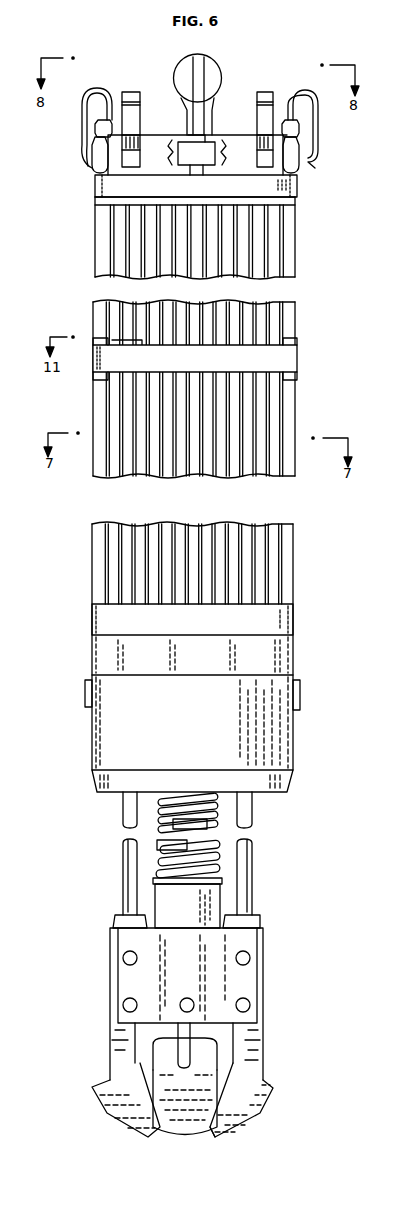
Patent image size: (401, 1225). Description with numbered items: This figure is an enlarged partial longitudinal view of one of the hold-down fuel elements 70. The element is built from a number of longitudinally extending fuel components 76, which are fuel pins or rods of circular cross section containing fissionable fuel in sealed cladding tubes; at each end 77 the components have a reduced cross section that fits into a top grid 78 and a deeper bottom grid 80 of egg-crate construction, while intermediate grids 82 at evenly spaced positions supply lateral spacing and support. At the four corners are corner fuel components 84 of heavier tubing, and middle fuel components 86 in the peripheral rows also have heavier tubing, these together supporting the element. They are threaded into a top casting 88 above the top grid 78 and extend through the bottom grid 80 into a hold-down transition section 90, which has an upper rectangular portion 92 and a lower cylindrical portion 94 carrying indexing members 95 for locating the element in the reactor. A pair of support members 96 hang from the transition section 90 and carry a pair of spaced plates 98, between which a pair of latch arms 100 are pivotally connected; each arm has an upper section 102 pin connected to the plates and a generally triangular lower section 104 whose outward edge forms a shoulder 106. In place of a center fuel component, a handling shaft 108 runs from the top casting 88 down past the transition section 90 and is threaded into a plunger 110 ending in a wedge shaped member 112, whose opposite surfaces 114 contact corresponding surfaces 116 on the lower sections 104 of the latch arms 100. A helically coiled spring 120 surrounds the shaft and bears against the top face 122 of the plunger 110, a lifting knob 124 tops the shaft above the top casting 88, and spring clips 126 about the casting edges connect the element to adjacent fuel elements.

The hold-down fuel element 70 is at (340, 550).
The fuel components 76 is at (238, 497).
The end 77 is at (293, 206).
The top grid 78 is at (297, 184).
The bottom grid 80 is at (283, 622).
The intermediate grids 82 is at (297, 357).
The corner fuel components 84 is at (100, 243).
The middle fuel components 86 is at (186, 478).
The top casting 88 is at (103, 158).
The hold-down transition section 90 is at (340, 690).
The upper rectangular portion 92 is at (293, 655).
The lower cylindrical portion 94 is at (280, 738).
The indexing members 95 is at (85, 690).
The support members 96 is at (130, 843).
The plates 98 is at (249, 983).
The latch arms 100 is at (272, 1072).
The upper section 102 is at (250, 1047).
The lower section 104 is at (250, 1106).
The shoulder 106 is at (268, 1083).
The handling shaft 108 is at (200, 140).
The plunger 110 is at (206, 913).
The wedge shaped member 112 is at (163, 1097).
The opposite surfaces 114 is at (174, 1132).
The surfaces 116 is at (238, 1127).
The helically coiled spring 120 is at (165, 858).
The top face 122 is at (216, 869).
The lifting knob 124 is at (210, 74).
The spring clips 126 is at (318, 120).